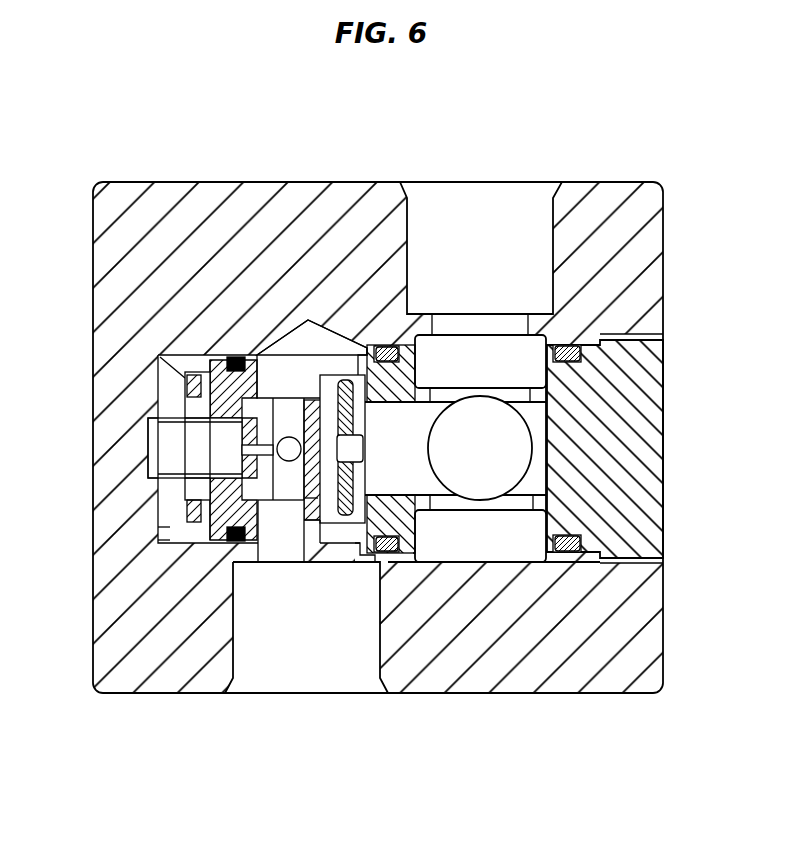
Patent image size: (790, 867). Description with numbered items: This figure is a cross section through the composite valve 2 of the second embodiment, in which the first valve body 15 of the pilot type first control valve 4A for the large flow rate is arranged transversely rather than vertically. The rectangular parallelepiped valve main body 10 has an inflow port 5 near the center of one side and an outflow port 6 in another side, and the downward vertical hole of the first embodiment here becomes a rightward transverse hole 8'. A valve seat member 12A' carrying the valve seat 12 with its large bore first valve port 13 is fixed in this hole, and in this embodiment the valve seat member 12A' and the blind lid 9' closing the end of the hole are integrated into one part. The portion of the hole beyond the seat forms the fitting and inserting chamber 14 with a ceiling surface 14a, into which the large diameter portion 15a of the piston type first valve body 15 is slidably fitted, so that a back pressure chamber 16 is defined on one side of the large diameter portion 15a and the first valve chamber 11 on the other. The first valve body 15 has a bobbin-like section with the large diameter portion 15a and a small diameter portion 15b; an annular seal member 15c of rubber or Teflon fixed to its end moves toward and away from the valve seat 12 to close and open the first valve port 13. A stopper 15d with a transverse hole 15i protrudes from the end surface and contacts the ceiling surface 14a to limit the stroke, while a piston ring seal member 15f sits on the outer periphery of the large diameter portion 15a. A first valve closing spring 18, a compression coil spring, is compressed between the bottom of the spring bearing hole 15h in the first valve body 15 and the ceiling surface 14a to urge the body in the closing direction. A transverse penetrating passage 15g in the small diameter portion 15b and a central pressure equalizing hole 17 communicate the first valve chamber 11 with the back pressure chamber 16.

The composite valve 2 is at (200, 168).
The outflow port 6 is at (545, 240).
The blind lid 9' is at (630, 448).
The rightward transverse hole 8' is at (494, 585).
The valve main body 10 is at (148, 695).
The valve seat 12 is at (353, 490).
The first valve port 13 is at (420, 493).
The valve seat member 12A' is at (422, 492).
The annular seal member 15c is at (450, 562).
The first valve body 15 is at (263, 472).
The large diameter portion 15a is at (263, 472).
The small diameter portion 15b is at (310, 500).
The transverse penetrating passage 15g is at (297, 405).
The spring bearing hole 15h is at (236, 357).
The seal member (piston ring) 15f is at (233, 543).
The transverse hole 15i is at (185, 375).
The stopper 15d is at (167, 527).
The fitting and inserting chamber 14 is at (178, 545).
The ceiling surface 14a is at (167, 534).
The back pressure chamber 16 is at (170, 453).
The first valve closing spring 18 is at (190, 426).
The pressure equalizing hole 17 is at (283, 458).
The first control valve 4A is at (337, 530).
The first valve chamber 11 is at (288, 530).
The inflow port 5 is at (237, 632).